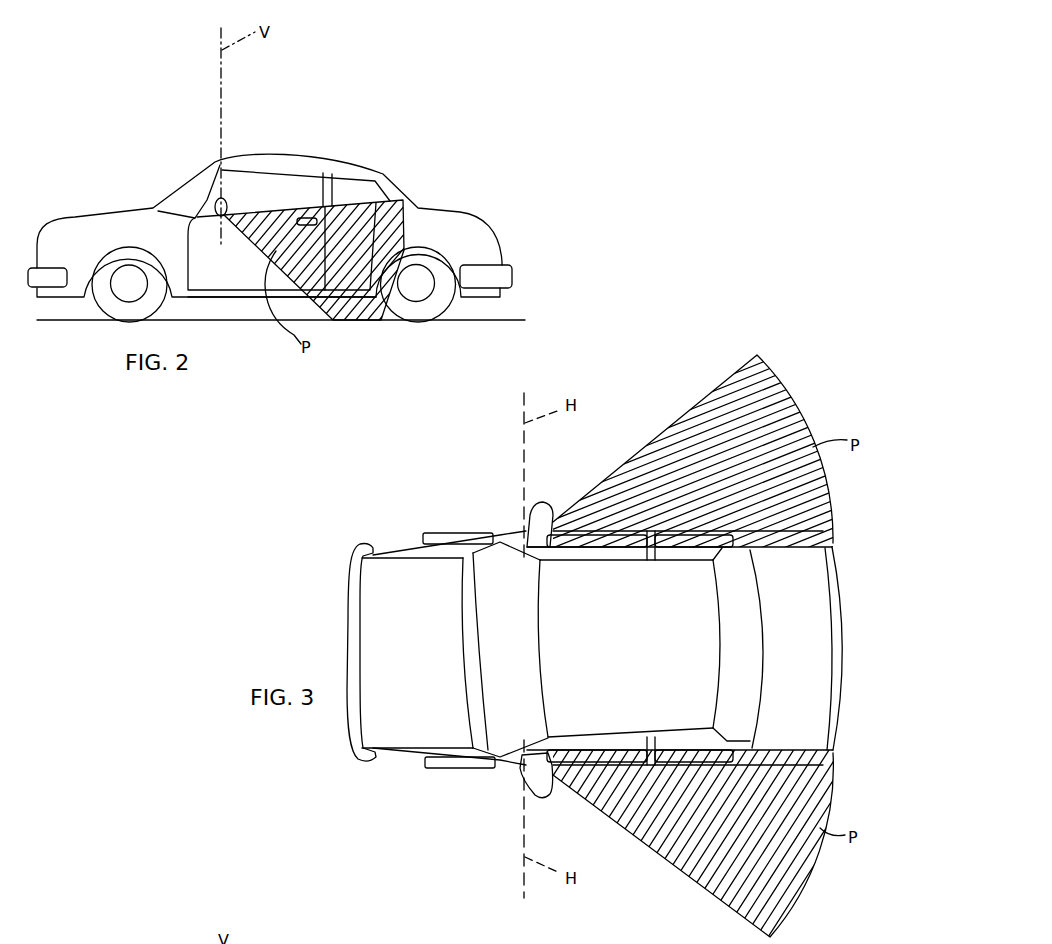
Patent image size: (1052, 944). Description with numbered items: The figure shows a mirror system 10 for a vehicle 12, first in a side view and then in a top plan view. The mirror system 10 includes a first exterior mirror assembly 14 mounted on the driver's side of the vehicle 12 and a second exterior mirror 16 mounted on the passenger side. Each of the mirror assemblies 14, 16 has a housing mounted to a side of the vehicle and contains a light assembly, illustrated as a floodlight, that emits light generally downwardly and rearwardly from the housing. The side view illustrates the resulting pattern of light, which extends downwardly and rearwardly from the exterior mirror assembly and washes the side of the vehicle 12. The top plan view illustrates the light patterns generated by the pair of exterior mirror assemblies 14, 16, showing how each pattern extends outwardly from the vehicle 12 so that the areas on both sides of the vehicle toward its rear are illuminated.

In FIG. 2, the mirror system 10 is at (311, 105).
In FIG. 3, the mirror system 10 is at (621, 656).
In FIG. 2, the vehicle 12 is at (360, 167).
In FIG. 3, the vehicle 12 is at (848, 633).
In FIG. 2, the first exterior mirror assembly 14 is at (228, 200).
In FIG. 3, the first exterior mirror assembly 14 is at (547, 798).
In FIG. 3, the second exterior mirror 16 is at (548, 503).